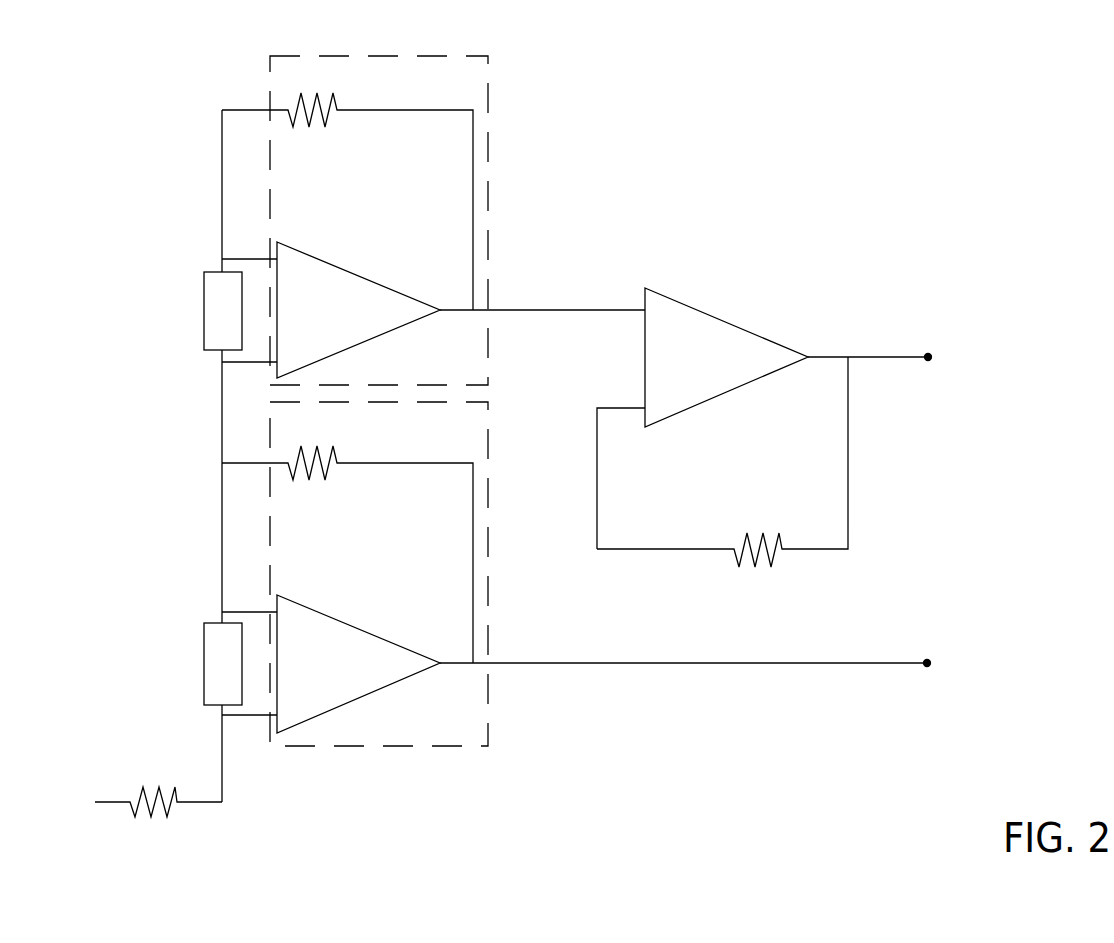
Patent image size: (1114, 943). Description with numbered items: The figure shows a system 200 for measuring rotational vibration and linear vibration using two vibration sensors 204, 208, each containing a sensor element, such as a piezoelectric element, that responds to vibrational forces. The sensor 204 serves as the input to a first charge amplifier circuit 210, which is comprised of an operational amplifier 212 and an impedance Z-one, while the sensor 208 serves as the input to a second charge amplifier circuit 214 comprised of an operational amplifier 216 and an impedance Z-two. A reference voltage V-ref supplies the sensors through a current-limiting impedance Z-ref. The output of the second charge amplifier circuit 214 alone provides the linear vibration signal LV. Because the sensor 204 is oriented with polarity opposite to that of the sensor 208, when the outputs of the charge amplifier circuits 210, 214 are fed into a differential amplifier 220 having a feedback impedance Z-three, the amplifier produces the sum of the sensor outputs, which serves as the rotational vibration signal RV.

The system 200 is at (660, 156).
The vibration sensor 204 is at (204, 310).
The vibration sensor 208 is at (204, 665).
The first charge amplifier circuit 210 is at (489, 162).
The operational amplifier 212 is at (403, 330).
The charge amplifier circuit 214 is at (487, 717).
The operational amplifier 216 is at (400, 683).
The differential amplifier 220 is at (723, 395).